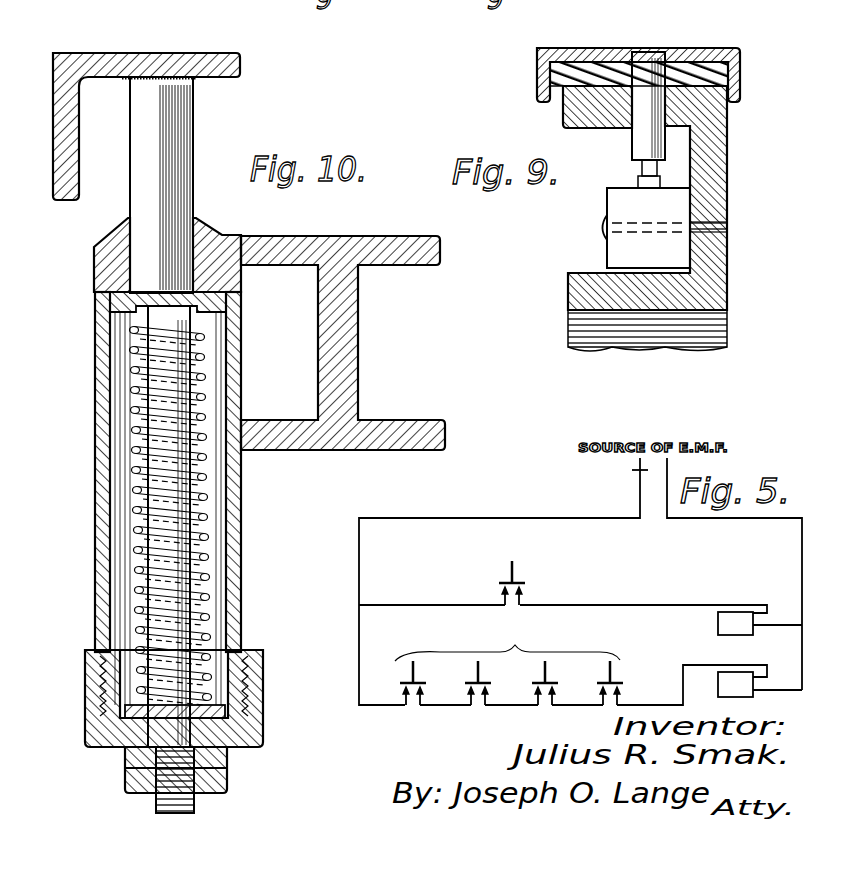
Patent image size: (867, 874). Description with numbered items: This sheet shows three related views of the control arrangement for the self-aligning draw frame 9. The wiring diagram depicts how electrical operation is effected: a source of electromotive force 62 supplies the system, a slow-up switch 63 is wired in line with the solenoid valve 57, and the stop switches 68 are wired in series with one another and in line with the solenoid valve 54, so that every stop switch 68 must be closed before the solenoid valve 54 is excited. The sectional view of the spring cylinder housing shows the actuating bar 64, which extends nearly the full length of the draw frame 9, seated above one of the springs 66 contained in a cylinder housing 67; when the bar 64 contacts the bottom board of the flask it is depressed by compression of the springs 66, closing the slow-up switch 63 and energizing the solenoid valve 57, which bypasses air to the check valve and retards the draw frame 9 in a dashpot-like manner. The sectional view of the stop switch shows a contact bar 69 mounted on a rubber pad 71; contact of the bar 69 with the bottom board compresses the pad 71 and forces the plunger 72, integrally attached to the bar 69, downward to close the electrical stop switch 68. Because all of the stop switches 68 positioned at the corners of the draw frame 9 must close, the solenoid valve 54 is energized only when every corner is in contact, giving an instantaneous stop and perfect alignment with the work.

In FIG. 10, the draw frame 9 is at (372, 444).
In FIG. 9, the draw frame 9 is at (572, 290).
In FIG. 10, the actuating bar 64 is at (115, 62).
In FIG. 10, the springs 66 is at (207, 520).
In FIG. 10, the cylinder housings 67 is at (110, 570).
In FIG. 9, the contact bars 69 is at (602, 52).
In FIG. 9, the rubber pads 71 is at (537, 73).
In FIG. 9, the plunger 72 is at (641, 142).
In FIG. 9, the stop switches 68 is at (628, 245).
In FIG. 5, the stop switches 68 is at (410, 678).
In FIG. 5, the source of electromotive force 62 is at (635, 472).
In FIG. 5, the slow-up switch 63 is at (514, 572).
In FIG. 5, the solenoid valve 57 is at (718, 627).
In FIG. 5, the solenoid valve 54 is at (718, 684).